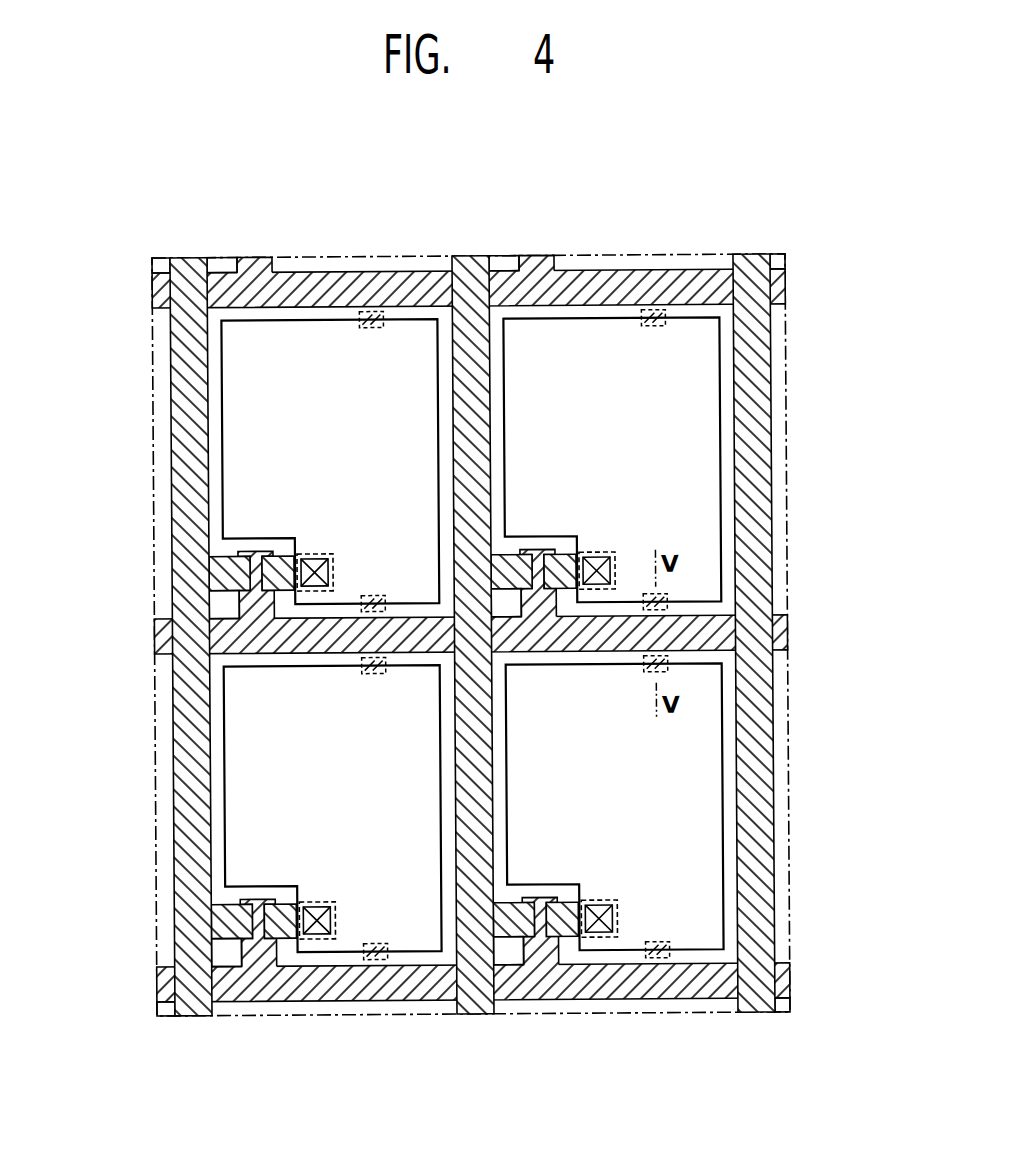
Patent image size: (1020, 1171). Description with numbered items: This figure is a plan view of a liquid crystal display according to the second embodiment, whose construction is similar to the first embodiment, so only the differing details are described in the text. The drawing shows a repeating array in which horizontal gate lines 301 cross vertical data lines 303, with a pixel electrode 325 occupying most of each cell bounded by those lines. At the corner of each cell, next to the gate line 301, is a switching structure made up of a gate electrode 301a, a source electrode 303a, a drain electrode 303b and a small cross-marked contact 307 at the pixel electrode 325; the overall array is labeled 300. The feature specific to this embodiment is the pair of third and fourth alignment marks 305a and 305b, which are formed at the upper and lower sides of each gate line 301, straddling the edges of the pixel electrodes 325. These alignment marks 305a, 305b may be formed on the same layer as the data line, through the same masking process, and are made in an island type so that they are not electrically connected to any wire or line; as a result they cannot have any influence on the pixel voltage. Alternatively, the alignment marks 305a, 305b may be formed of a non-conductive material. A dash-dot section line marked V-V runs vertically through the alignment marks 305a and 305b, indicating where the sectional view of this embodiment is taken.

The thin film transistor array substrate 300 is at (137, 258).
The gate line 301 is at (780, 982).
The gate electrode 301a is at (538, 944).
The data line 303 is at (751, 919).
The source electrode 303a is at (508, 930).
The drain electrode 303b is at (559, 933).
The third alignment mark 305a is at (665, 605).
The fourth alignment mark 305b is at (665, 667).
The drain contact hole 307 is at (599, 933).
The pixel electrode 325 is at (708, 489).